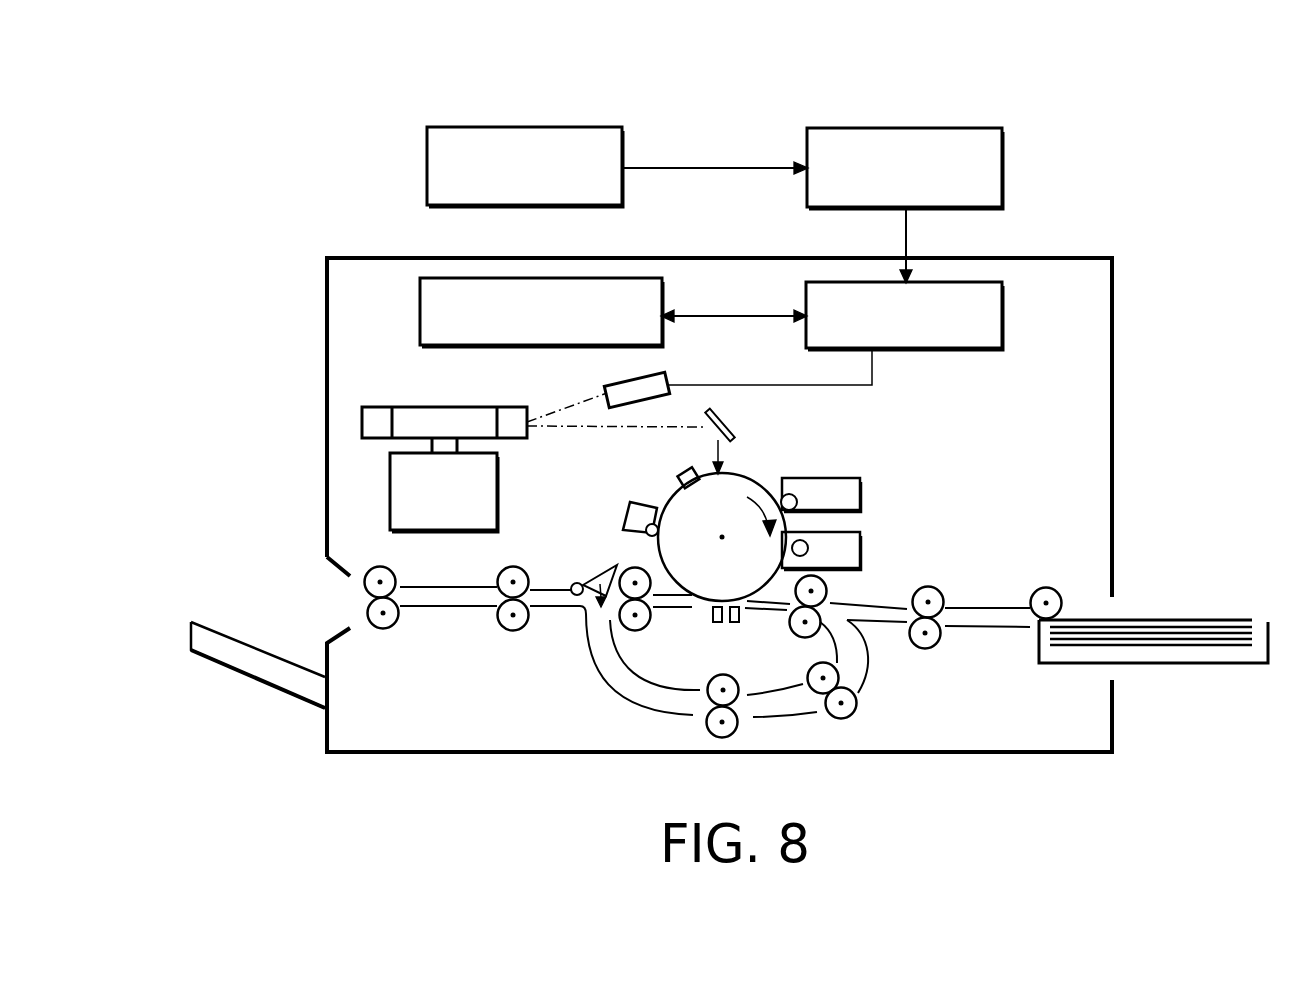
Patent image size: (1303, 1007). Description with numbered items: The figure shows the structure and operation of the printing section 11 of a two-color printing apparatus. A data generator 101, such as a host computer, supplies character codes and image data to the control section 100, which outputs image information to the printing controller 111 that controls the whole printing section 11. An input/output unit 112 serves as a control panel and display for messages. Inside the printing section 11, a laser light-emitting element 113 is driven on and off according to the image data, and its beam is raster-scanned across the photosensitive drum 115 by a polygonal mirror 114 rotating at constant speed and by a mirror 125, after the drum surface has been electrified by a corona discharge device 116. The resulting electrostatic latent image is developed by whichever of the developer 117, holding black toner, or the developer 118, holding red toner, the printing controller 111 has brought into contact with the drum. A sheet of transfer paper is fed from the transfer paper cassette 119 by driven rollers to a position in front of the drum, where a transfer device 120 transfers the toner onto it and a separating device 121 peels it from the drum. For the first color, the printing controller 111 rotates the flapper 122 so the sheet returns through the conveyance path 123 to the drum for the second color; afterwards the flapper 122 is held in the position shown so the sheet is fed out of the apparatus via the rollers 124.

The printing section 11 is at (1113, 297).
The control section 100 is at (947, 128).
The data generator 101 is at (543, 127).
The printing controller 111 is at (947, 348).
The input/output unit 112 is at (420, 315).
The laser light-emitting element 113 is at (648, 377).
The polygonal mirror 114 is at (443, 407).
The photosensitive drum 115 is at (673, 498).
The corona discharge device 116 is at (684, 472).
The developer 117 is at (860, 493).
The developer 118 is at (860, 544).
The transfer paper cassette 119 is at (1145, 617).
The transfer device 120 is at (738, 620).
The separating device 121 is at (716, 620).
The flapper 122 is at (597, 584).
The conveyance path 123 is at (618, 670).
The rollers 124 is at (397, 567).
The mirror 125 is at (733, 426).